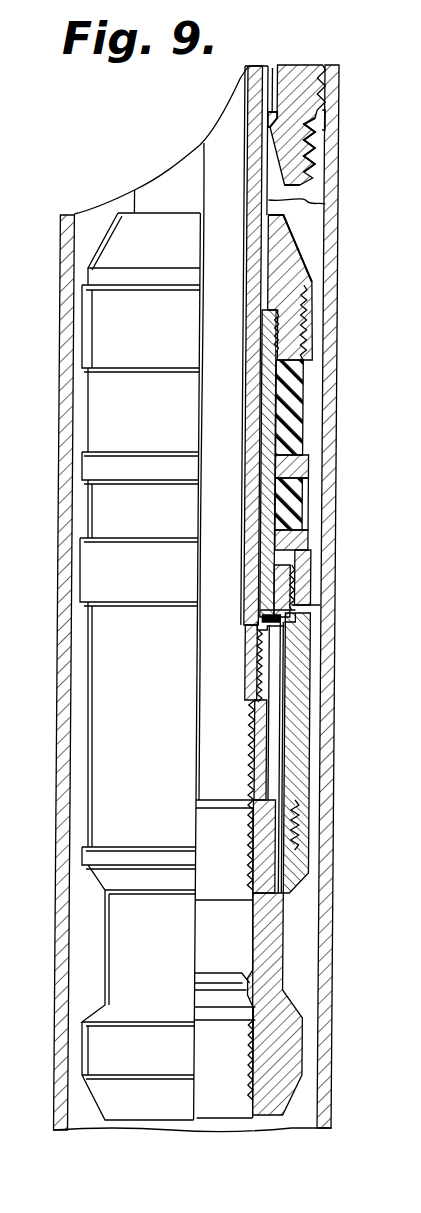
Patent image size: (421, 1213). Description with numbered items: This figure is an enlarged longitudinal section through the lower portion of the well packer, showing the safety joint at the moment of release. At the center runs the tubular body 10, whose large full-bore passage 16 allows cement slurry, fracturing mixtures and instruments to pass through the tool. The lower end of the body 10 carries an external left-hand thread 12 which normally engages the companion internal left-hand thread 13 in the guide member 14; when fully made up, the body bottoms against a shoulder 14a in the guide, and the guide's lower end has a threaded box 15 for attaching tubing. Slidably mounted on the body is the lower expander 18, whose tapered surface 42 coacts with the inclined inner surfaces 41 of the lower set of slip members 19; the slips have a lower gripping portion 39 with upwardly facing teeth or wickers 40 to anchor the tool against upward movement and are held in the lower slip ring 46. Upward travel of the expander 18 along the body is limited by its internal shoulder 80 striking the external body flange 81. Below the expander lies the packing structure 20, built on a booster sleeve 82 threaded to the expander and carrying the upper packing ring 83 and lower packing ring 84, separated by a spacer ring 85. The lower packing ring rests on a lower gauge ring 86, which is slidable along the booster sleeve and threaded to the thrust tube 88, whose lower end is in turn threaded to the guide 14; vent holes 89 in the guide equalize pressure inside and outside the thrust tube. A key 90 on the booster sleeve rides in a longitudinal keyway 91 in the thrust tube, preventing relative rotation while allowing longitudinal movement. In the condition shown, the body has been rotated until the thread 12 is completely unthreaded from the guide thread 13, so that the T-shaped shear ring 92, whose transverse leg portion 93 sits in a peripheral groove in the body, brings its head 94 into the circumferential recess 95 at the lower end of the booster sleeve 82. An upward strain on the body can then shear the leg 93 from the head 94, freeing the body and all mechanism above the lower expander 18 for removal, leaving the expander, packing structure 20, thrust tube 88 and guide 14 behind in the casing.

The body 10 is at (327, 204).
The external left-hand thread 12 is at (264, 771).
The internal left-hand thread 13 is at (257, 862).
The guide member 14 is at (105, 1054).
The shoulder 14a is at (262, 968).
The threaded box 15 is at (258, 1060).
The passage 16 is at (243, 407).
The lower expander 18 is at (300, 263).
The lower set of slip members 19 is at (319, 125).
The packing structure 20 is at (319, 490).
The lower gripping portion 39 is at (304, 143).
The teeth or wickers 40 is at (317, 82).
The inner surfaces 41 is at (279, 163).
The tapered surface 42 is at (302, 244).
The lower slip ring 46 is at (275, 115).
The internal shoulder 80 is at (267, 284).
The external body flange 81 is at (275, 118).
The booster sleeve 82 is at (274, 522).
The upper packing ring 83 is at (301, 388).
The lower packing ring 84 is at (299, 505).
The spacer ring 85 is at (313, 468).
The lower gauge ring 86 is at (317, 594).
The thrust tube 88 is at (302, 727).
The vent holes 89 is at (281, 828).
The key 90 is at (294, 578).
The keyway 91 is at (286, 661).
The T-shaped ring 92 is at (297, 615).
The transverse leg portion 93 is at (267, 620).
The head 94 is at (297, 634).
The circumferential recess 95 is at (280, 615).